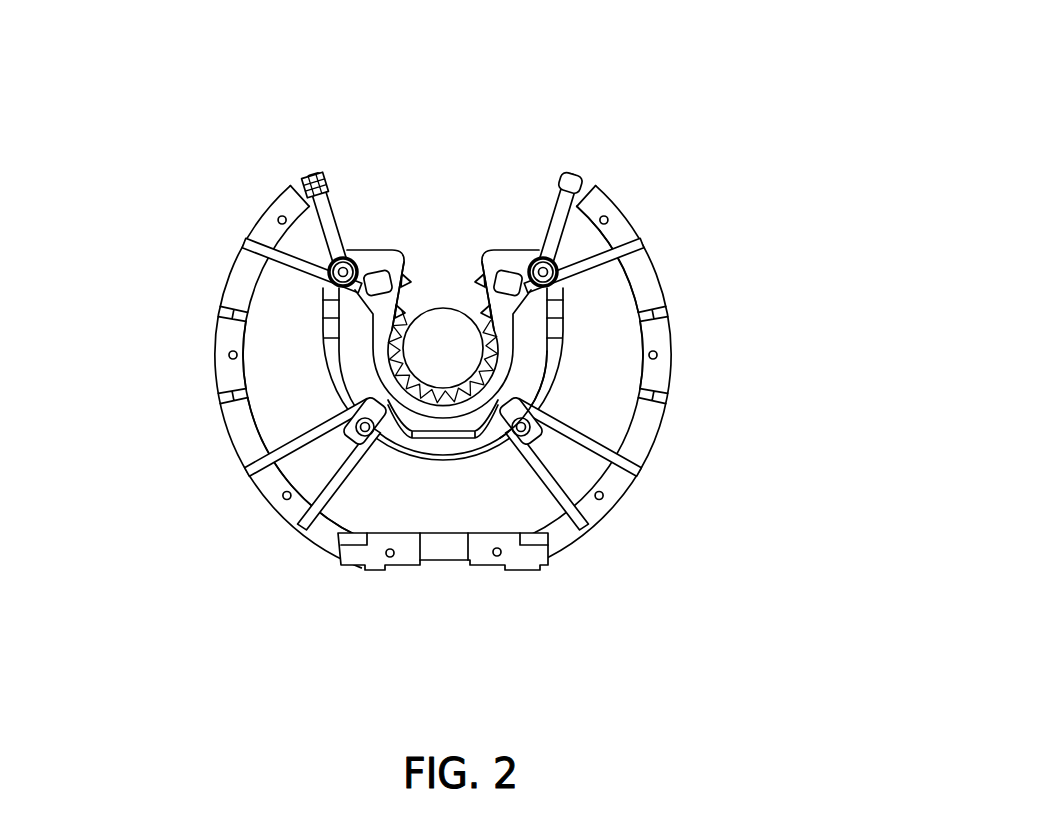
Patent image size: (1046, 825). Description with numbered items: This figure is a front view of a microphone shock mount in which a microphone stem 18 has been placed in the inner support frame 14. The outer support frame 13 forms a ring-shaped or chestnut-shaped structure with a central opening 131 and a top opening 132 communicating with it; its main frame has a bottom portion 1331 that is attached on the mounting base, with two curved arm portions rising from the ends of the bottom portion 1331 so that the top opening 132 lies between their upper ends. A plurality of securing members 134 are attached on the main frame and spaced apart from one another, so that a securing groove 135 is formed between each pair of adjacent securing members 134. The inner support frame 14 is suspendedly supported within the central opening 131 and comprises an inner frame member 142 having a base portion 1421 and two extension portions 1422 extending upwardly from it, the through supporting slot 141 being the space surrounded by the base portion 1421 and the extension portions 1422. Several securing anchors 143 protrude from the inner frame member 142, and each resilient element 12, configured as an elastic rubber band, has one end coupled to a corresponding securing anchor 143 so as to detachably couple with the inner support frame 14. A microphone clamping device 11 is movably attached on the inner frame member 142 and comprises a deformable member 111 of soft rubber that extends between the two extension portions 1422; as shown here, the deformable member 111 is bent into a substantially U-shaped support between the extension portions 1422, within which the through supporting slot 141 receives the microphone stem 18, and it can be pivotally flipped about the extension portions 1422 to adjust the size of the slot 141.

The microphone clamping device 11 is at (362, 242).
The deformable member 111 is at (516, 280).
The resilient element 12 is at (302, 270).
The outer support frame 13 is at (293, 197).
The central opening 131 is at (380, 487).
The top opening 132 is at (530, 147).
The bottom portion 1331 is at (443, 570).
The securing member 134 is at (647, 287).
The securing groove 135 is at (676, 313).
The inner support frame 14 is at (581, 355).
The through supporting slot 141 is at (457, 280).
The inner frame member 142 is at (337, 355).
The base portion 1421 is at (485, 443).
The extension portion 1422 is at (545, 398).
The securing anchor 143 is at (329, 271).
The microphone stem 18 is at (453, 325).